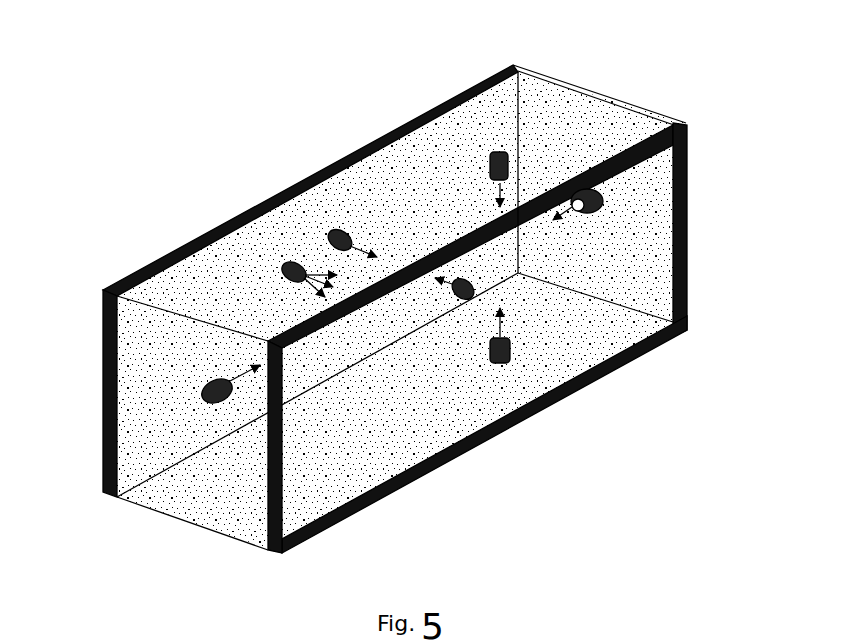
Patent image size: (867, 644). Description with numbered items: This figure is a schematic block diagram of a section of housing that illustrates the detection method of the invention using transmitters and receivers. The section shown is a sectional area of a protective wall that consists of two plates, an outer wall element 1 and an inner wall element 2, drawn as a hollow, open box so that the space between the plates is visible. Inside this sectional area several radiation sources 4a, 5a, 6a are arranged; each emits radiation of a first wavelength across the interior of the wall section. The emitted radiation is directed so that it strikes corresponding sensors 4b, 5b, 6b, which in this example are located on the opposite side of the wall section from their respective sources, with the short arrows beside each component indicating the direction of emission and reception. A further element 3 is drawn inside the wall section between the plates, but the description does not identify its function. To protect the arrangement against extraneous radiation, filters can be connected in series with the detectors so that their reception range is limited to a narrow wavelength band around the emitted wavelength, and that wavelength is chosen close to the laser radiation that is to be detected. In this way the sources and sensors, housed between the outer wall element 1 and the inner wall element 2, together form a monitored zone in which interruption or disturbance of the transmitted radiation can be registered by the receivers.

The outer wall element 1 is at (148, 265).
The inner wall element 2 is at (280, 512).
The spray nozzle 3 is at (282, 257).
The radiation source 4a is at (333, 227).
The sensor 4b is at (475, 292).
The radiation source 5a is at (490, 148).
The sensor 5b is at (515, 365).
The radiation source 6a is at (608, 205).
The sensor 6b is at (200, 392).